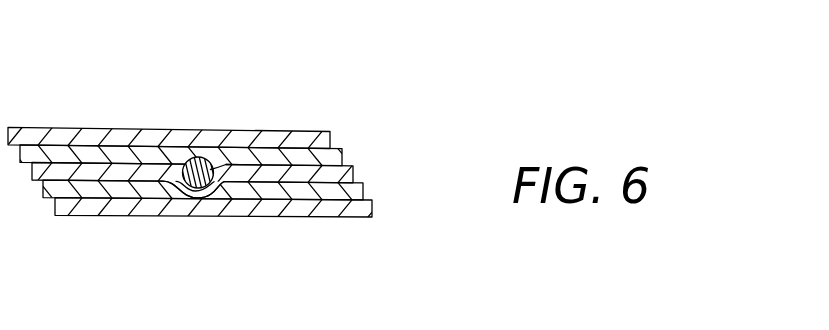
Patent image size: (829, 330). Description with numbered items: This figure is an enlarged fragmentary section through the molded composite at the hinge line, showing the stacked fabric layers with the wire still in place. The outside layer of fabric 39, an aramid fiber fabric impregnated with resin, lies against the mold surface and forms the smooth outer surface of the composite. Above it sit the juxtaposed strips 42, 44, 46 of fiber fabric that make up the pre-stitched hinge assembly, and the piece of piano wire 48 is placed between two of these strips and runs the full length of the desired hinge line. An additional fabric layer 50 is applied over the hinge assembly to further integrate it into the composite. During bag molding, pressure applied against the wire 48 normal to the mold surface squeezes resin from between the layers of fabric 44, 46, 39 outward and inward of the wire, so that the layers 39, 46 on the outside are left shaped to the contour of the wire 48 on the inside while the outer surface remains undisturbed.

The additional fabric layer 50 is at (153, 127).
The fabric strip 42 is at (339, 152).
The fabric strip 44 is at (349, 174).
The fabric strip 46 is at (362, 190).
The outside layer of fabric 39 is at (352, 216).
The piano wire 48 is at (202, 184).